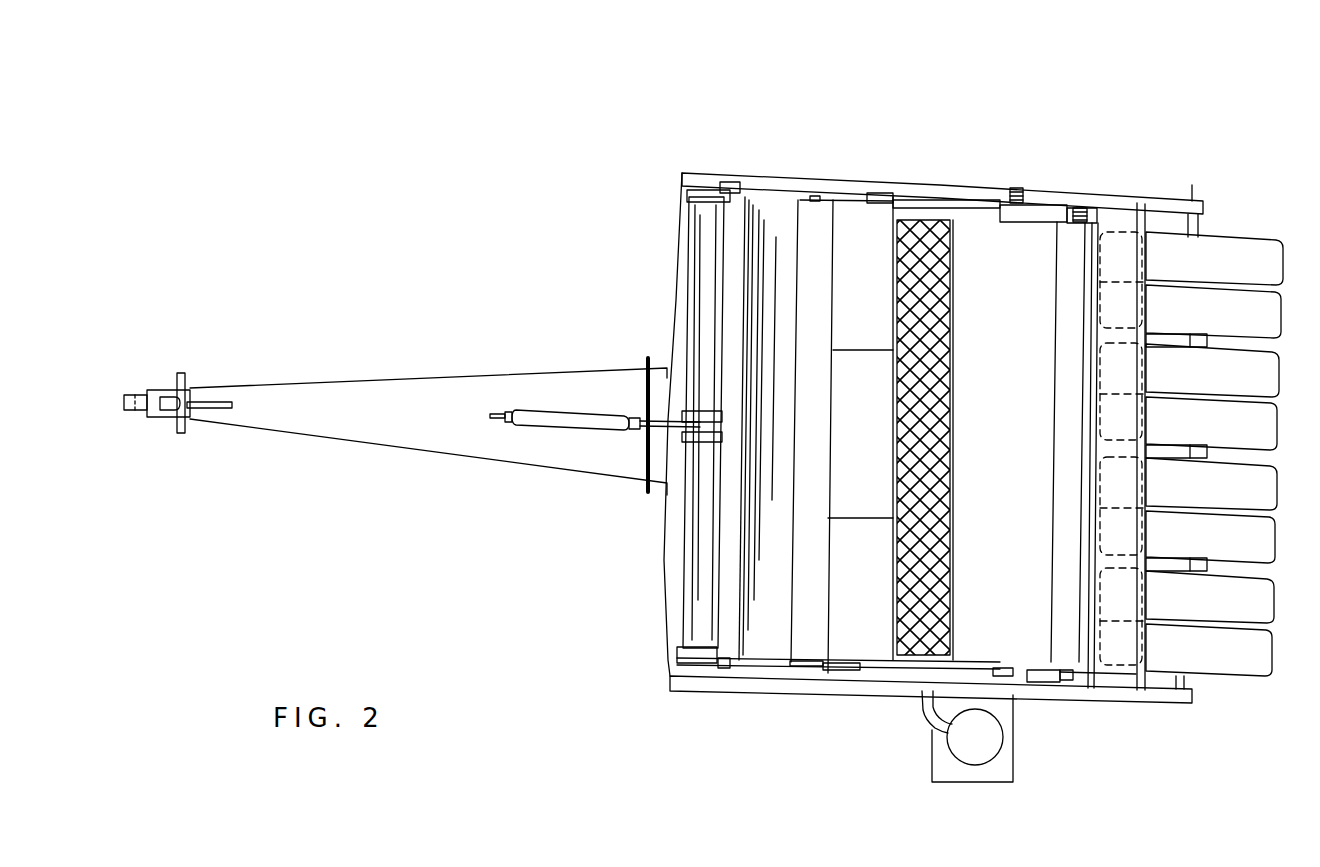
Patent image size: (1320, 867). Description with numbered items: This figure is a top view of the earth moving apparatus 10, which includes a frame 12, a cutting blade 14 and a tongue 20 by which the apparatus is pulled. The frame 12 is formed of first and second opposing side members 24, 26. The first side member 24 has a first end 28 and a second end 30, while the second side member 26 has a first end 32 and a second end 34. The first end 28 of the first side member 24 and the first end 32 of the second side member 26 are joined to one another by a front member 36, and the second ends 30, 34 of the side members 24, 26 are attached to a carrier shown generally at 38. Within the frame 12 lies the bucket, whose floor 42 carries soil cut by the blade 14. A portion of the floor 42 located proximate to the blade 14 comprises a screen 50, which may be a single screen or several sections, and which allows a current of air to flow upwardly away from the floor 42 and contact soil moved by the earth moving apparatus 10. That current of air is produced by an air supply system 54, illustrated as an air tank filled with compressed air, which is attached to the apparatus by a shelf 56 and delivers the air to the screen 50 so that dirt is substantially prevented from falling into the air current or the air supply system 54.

The earth moving apparatus 10 is at (615, 198).
The frame 12 is at (798, 685).
The cutting blade 14 is at (858, 293).
The tongue 20 is at (408, 392).
The first side member 24 is at (750, 683).
The second side member 26 is at (823, 180).
The first end of first side member 28 is at (670, 680).
The second end of first side member 30 is at (1035, 690).
The first end of second side member 32 is at (694, 173).
The second end of second side member 34 is at (977, 290).
The front member 36 is at (678, 320).
The carrier 38 is at (1160, 700).
The floor 42 is at (1067, 260).
The screen 50 is at (943, 505).
The air supply system 54 is at (987, 750).
The shelf 56 is at (923, 720).